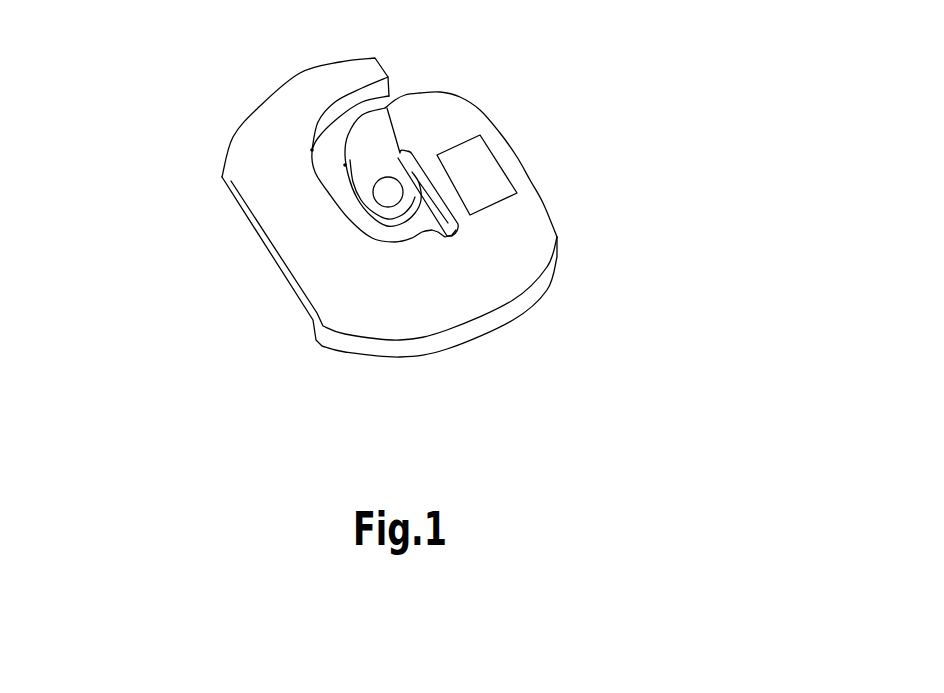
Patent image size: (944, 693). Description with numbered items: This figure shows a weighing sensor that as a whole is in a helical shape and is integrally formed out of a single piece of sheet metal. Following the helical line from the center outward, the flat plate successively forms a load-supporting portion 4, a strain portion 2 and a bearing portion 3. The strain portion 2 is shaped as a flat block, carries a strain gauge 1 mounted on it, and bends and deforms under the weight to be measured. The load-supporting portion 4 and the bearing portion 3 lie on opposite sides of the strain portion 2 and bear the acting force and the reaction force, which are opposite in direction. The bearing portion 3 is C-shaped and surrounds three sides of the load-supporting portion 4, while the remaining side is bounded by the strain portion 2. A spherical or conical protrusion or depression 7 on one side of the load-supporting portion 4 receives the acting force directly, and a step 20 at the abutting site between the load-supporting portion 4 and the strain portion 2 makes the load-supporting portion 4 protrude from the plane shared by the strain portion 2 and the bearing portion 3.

The strain gauge 1 is at (476, 188).
The strain portion 2 is at (503, 160).
The bearing portion 3 is at (280, 210).
The load-supporting portion 4 is at (370, 163).
The protrusion or depression 7 is at (388, 193).
The step 20 is at (402, 126).